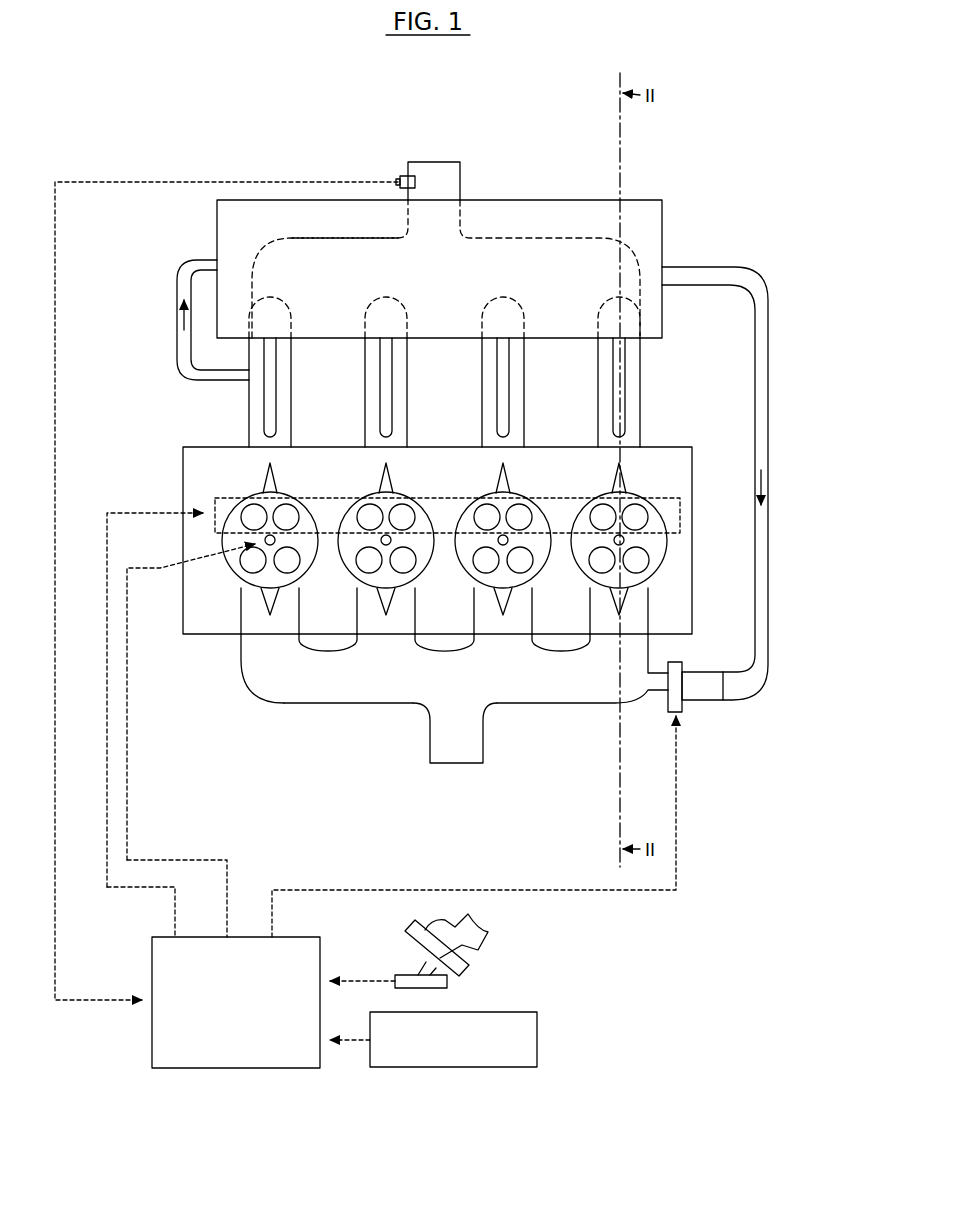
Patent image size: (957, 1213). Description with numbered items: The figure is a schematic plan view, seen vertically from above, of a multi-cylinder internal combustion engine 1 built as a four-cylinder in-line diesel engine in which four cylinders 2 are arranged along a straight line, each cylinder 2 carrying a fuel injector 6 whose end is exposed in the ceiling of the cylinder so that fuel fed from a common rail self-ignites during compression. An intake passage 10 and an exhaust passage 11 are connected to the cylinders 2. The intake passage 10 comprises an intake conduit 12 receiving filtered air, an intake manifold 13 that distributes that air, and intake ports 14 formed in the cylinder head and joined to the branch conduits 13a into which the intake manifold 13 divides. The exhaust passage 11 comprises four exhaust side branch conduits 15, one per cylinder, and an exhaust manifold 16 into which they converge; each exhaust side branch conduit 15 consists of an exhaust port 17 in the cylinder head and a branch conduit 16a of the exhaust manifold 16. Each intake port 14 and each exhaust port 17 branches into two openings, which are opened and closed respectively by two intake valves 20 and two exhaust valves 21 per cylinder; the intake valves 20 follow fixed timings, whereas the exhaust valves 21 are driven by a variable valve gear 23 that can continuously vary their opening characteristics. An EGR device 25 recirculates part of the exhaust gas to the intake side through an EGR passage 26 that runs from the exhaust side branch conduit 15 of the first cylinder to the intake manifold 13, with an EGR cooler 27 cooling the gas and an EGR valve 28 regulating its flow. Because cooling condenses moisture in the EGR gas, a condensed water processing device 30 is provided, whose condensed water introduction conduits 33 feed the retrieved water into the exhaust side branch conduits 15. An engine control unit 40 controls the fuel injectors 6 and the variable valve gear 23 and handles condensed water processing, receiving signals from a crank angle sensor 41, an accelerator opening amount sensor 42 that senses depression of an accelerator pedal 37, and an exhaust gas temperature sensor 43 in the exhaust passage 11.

The multi-cylinder internal combustion engine 1 is at (727, 123).
The cylinder 2 is at (350, 573).
The fuel injector 6 is at (265, 544).
The intake passage 10 is at (262, 690).
The exhaust passage 11 is at (510, 233).
The intake conduit 12 is at (430, 745).
The intake manifold 13 is at (323, 692).
The branch conduit 13a is at (240, 648).
The intake port 14 is at (245, 607).
The exhaust side branch conduit 15 is at (128, 390).
The exhaust manifold 16 is at (255, 250).
The branch conduit 16a is at (249, 403).
The exhaust port 17 is at (262, 457).
The intake valve 20 is at (372, 565).
The exhaust valve 21 is at (287, 521).
The variable valve gear 23 is at (212, 505).
The EGR device 25 is at (782, 250).
The EGR passage 26 is at (185, 272).
The EGR cooler 27 is at (665, 221).
The EGR valve 28 is at (698, 692).
The condensed water processing device 30 is at (640, 360).
The condensed water introduction conduit 33 is at (268, 377).
The accelerator pedal 37 is at (405, 932).
The engine control unit 40 is at (152, 951).
The crank angle sensor 41 is at (539, 1038).
The accelerator opening amount sensor 42 is at (458, 984).
The exhaust gas temperature sensor 43 is at (396, 180).